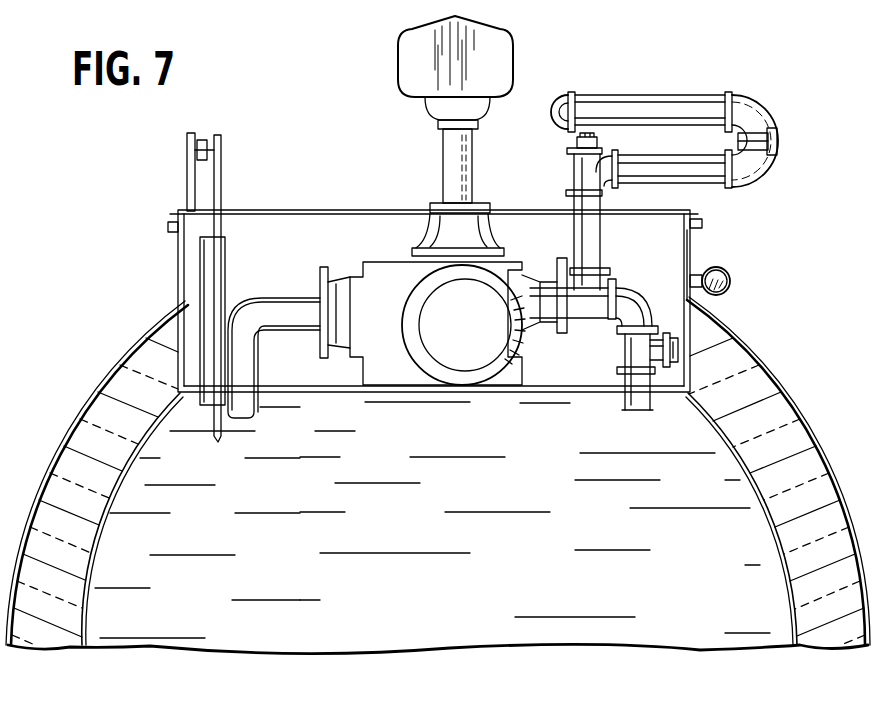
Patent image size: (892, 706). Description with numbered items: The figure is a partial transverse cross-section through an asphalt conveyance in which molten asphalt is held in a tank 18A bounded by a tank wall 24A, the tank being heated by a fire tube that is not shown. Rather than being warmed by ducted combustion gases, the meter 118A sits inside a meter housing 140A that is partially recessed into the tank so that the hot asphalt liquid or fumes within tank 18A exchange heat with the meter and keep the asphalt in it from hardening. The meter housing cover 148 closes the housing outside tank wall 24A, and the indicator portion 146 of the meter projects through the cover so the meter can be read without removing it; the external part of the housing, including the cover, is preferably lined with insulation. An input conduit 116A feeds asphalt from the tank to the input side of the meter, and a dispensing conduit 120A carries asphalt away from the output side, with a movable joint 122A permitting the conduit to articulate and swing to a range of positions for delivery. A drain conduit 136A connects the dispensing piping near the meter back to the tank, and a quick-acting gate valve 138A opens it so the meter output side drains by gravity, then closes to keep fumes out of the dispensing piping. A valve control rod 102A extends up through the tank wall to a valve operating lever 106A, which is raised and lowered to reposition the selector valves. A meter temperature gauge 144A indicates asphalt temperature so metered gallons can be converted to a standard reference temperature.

The tank 18A is at (401, 520).
The tank wall 24A is at (90, 392).
The valve control rod 102A is at (224, 178).
The valve operating lever 106A is at (205, 138).
The input conduit 116A is at (255, 410).
The meter 118A is at (379, 268).
The dispensing conduit 120A is at (558, 98).
The movable joint 122A is at (764, 105).
The drain conduit 136A is at (625, 398).
The gate valve 138A is at (642, 350).
The meter housing 140A is at (698, 256).
The meter temperature gauge 144A is at (730, 282).
The indicator portion 146 is at (519, 50).
The meter housing cover 148 is at (341, 208).